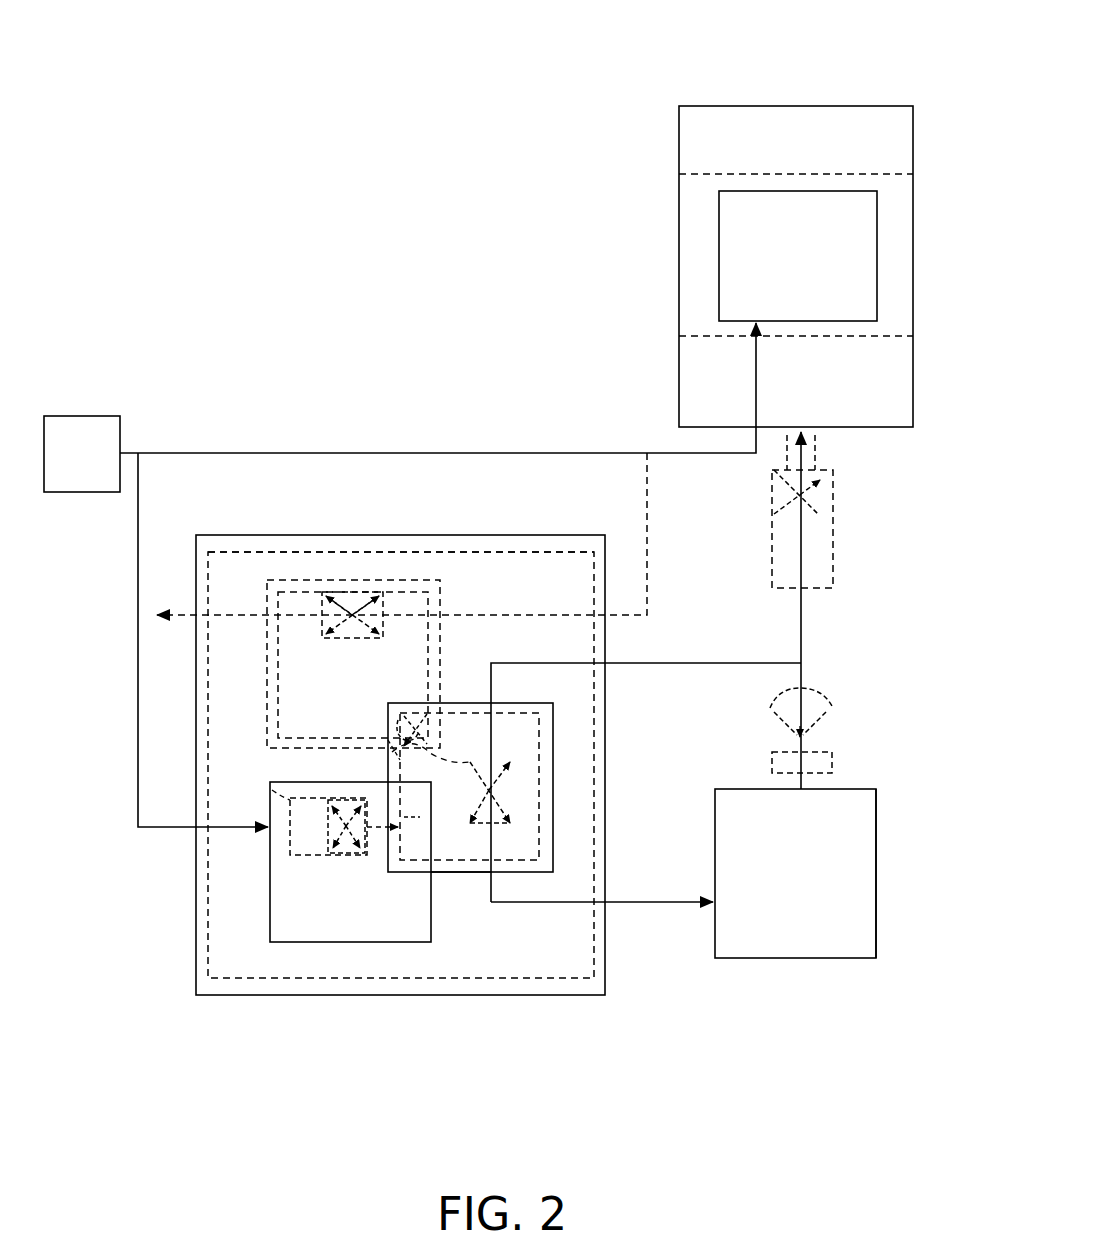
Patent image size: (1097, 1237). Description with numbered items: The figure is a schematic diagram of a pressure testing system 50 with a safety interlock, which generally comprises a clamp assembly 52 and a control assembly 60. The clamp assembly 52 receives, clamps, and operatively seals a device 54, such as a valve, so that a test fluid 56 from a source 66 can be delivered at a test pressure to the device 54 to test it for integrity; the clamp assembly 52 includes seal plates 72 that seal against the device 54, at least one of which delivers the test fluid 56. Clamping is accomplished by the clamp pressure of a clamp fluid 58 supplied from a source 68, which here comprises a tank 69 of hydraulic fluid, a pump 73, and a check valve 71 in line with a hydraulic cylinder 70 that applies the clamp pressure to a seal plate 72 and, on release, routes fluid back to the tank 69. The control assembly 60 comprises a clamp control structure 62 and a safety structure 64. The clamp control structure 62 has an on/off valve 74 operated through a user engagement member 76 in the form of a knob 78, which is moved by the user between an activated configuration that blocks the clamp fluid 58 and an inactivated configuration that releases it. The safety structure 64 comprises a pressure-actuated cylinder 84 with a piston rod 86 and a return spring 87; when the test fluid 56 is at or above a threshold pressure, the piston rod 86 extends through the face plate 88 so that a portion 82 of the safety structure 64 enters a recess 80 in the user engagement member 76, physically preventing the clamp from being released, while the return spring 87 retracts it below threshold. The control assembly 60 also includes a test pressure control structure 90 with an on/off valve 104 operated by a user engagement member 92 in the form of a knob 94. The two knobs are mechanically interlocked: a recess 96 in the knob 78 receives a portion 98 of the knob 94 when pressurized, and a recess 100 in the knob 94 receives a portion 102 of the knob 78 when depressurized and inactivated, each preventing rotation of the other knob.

The pressure testing system 50 is at (326, 98).
The clamp assembly 52 is at (848, 78).
The device 54 is at (814, 266).
The test fluid 56 is at (447, 452).
The clamp fluid 58 is at (801, 618).
The control assembly 60 is at (485, 535).
The clamp control structure 62 is at (553, 763).
The safety structure 64 is at (345, 942).
The source of test fluid 66 is at (98, 464).
The source of clamp fluid 68 is at (814, 886).
The tank 69 is at (847, 825).
The hydraulic cylinder 70 is at (833, 545).
The check valve 71 is at (832, 693).
The seal plate 72 is at (913, 142).
The pump 73 is at (832, 764).
The on/off valve 74 is at (510, 760).
The user engagement member 76 is at (539, 820).
The knob 78 is at (468, 873).
The recess 80 is at (484, 794).
The portion of safety structure 82 is at (414, 816).
The pressure-actuated cylinder 84 is at (305, 858).
The piston rod 86 is at (370, 854).
The return spring 87 is at (272, 790).
The face plate 88 is at (363, 534).
The test pressure control structure 90 is at (305, 578).
The user engagement member 92 is at (330, 592).
The knob 94 is at (266, 657).
The recess 96 is at (448, 716).
The portion of knob 98 is at (431, 760).
The recess 100 is at (392, 722).
The portion of knob 102 is at (387, 760).
The on/off valve 104 is at (366, 627).